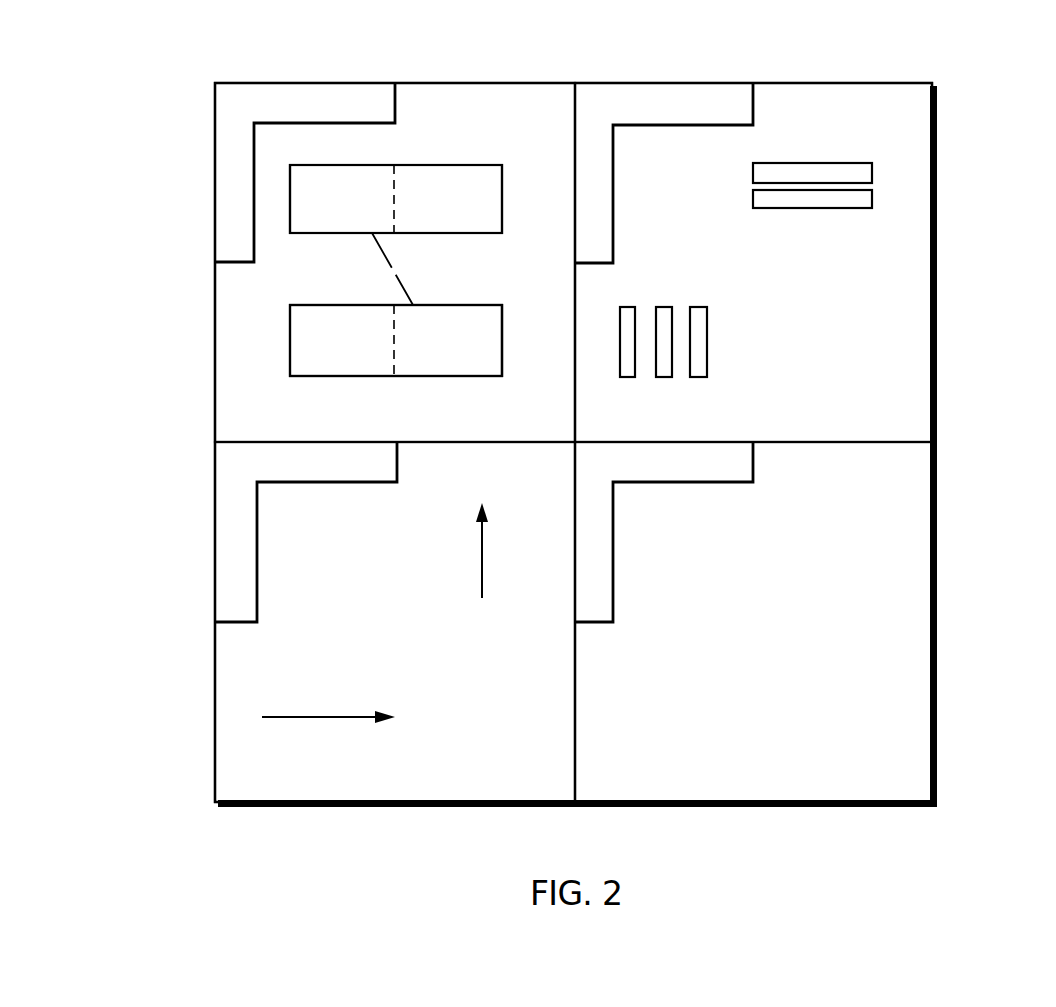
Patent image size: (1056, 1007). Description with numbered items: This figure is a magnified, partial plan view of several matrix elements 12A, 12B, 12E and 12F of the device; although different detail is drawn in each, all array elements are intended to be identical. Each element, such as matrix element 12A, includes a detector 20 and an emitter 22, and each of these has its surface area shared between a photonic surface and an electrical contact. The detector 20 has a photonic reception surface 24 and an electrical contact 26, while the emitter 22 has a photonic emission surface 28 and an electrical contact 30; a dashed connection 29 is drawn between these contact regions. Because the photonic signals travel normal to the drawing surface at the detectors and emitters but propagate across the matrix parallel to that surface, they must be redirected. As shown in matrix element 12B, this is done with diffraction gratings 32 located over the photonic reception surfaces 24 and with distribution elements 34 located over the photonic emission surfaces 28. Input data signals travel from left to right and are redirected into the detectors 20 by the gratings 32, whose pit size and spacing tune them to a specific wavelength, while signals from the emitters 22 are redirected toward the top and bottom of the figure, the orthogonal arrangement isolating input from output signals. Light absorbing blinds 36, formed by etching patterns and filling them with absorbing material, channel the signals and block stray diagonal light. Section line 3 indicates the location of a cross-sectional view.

The section line of FIG. 3 is at (205, 597).
The matrix element 12A is at (553, 425).
The matrix element 12B is at (909, 425).
The matrix element 12E is at (553, 782).
The matrix element 12F is at (907, 784).
The detector 20 is at (290, 327).
The emitter 22 is at (430, 165).
The photonic reception surface 24 is at (325, 348).
The electrical contact 26 is at (430, 367).
The photonic emission surface 28 is at (418, 213).
The dashed connector 29 is at (396, 276).
The electrical contact 30 is at (367, 212).
The diffraction grating 32 is at (667, 303).
The distribution element 34 is at (753, 174).
The blind 36 is at (225, 150).